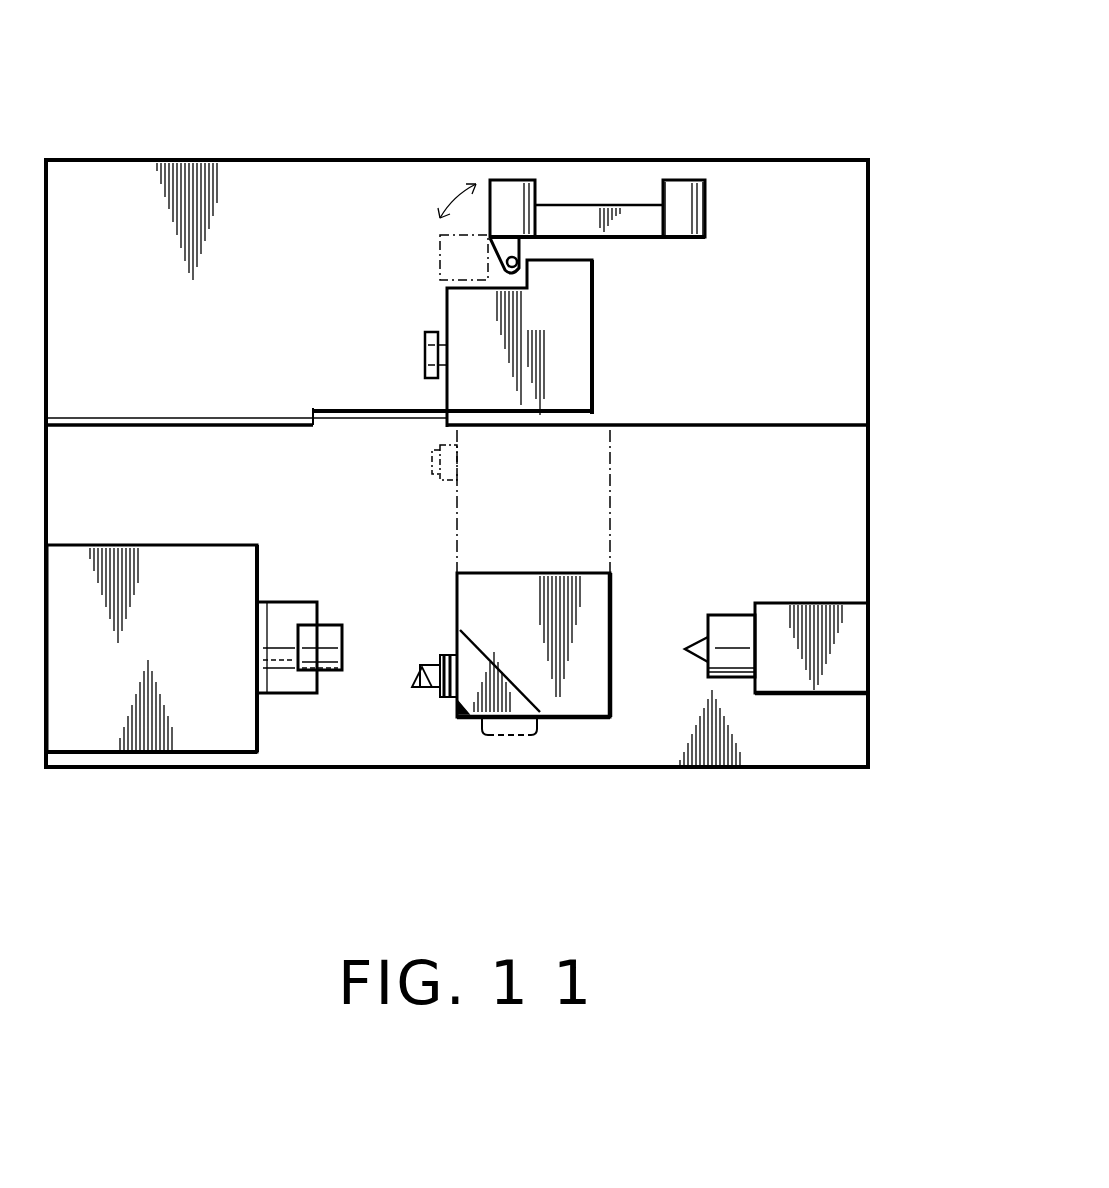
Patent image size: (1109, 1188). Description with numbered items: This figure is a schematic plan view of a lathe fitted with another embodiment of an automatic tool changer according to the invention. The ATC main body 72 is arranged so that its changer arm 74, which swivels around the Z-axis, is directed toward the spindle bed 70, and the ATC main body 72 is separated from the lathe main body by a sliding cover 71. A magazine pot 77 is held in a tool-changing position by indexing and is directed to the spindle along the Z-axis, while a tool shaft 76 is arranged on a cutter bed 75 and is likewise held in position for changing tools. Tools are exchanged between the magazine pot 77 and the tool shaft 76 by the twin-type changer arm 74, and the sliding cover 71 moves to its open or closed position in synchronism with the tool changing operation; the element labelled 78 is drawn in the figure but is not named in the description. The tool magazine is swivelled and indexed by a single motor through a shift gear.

The spindle bed 70 is at (162, 550).
The sliding cover 71 is at (373, 425).
The ATC main body 72 is at (565, 347).
The changer arm 74 is at (425, 352).
The cutter bed 75 is at (580, 610).
The tool shaft 76 is at (440, 655).
The magazine pot 77 is at (695, 207).
The pivoting arm 78 is at (600, 198).